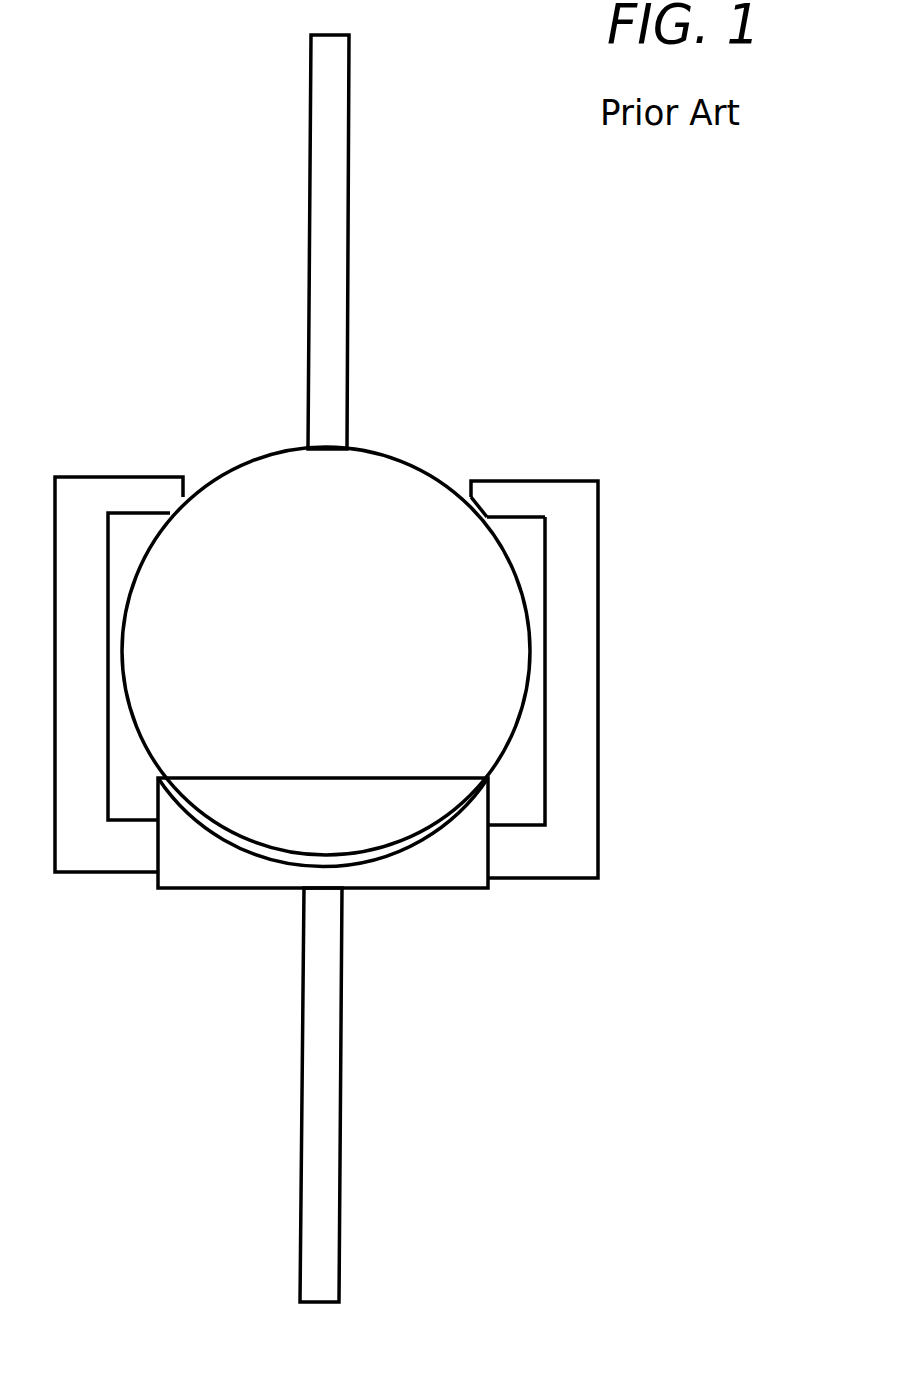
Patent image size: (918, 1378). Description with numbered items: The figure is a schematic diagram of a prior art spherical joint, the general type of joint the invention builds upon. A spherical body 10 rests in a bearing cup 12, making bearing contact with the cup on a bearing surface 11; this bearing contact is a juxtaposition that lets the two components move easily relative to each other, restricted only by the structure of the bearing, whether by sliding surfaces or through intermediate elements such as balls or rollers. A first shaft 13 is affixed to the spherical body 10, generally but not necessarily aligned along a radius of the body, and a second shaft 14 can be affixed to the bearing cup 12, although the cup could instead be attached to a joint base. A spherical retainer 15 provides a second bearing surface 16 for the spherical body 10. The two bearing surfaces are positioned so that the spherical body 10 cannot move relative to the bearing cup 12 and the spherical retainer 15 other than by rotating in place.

The spherical body 10 is at (325, 658).
The bearing surface 11 is at (417, 835).
The bearing cup 12 is at (471, 873).
The first shaft 13 is at (345, 147).
The second shaft 14 is at (340, 1242).
The spherical retainer 15 is at (600, 498).
The second bearing surface 16 is at (470, 497).